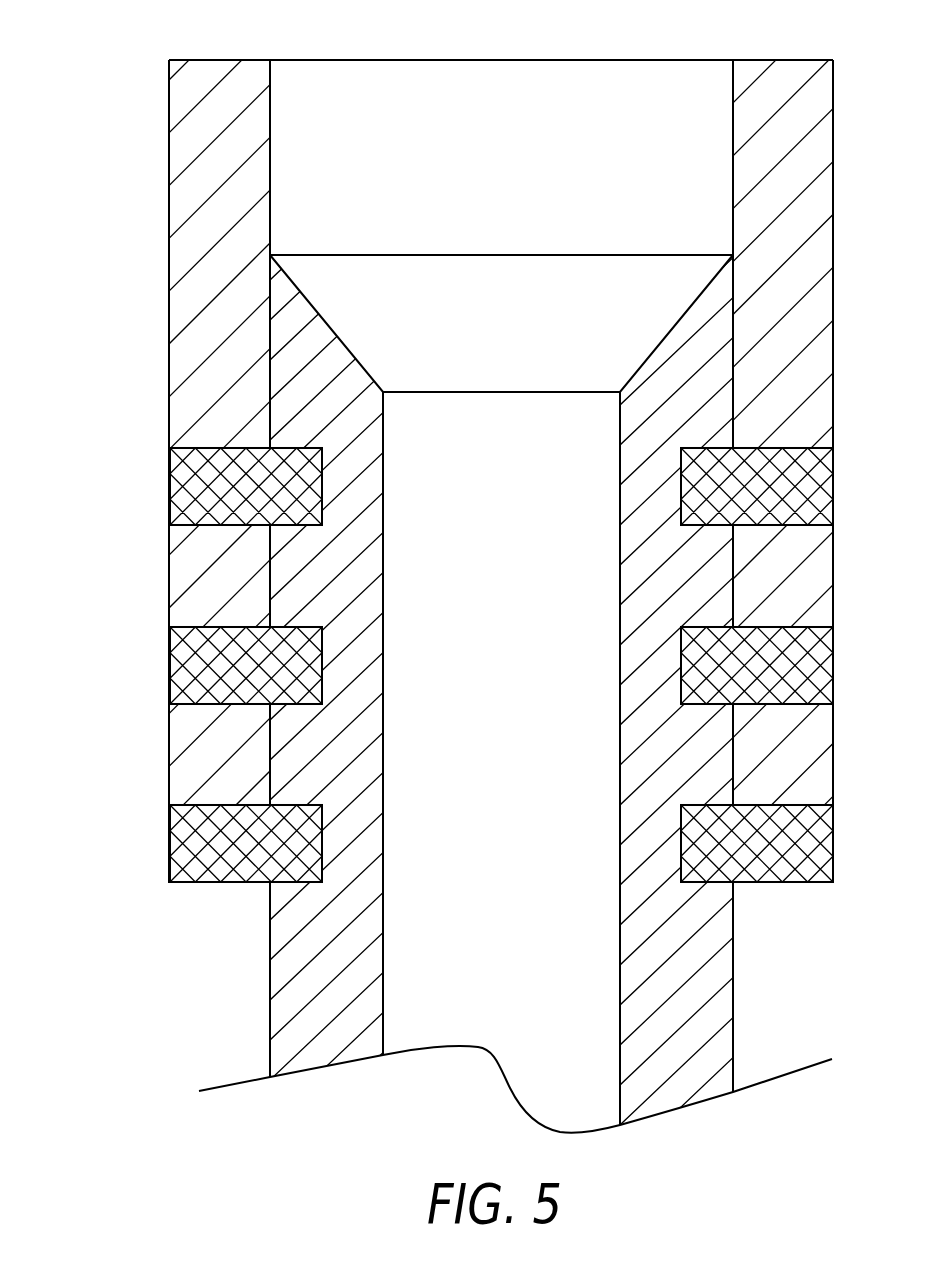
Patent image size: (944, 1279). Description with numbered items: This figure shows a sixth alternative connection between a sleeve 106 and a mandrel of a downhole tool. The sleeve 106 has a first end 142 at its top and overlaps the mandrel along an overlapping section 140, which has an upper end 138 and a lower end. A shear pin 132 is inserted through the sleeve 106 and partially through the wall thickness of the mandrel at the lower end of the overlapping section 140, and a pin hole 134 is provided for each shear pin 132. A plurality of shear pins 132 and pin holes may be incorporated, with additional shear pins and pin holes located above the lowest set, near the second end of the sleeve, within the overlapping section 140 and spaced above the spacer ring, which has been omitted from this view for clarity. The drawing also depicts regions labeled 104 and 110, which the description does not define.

The chamber / cavity of the fixture 104 is at (516, 346).
The sleeve 106 is at (226, 126).
The bore / passage 110 is at (514, 491).
The shear pin 132 is at (266, 496).
The pin hole 134 is at (833, 806).
The upper end of overlapping section 138 is at (270, 255).
The overlapping section 140 is at (112, 255).
The first end of sleeve 142 is at (228, 58).